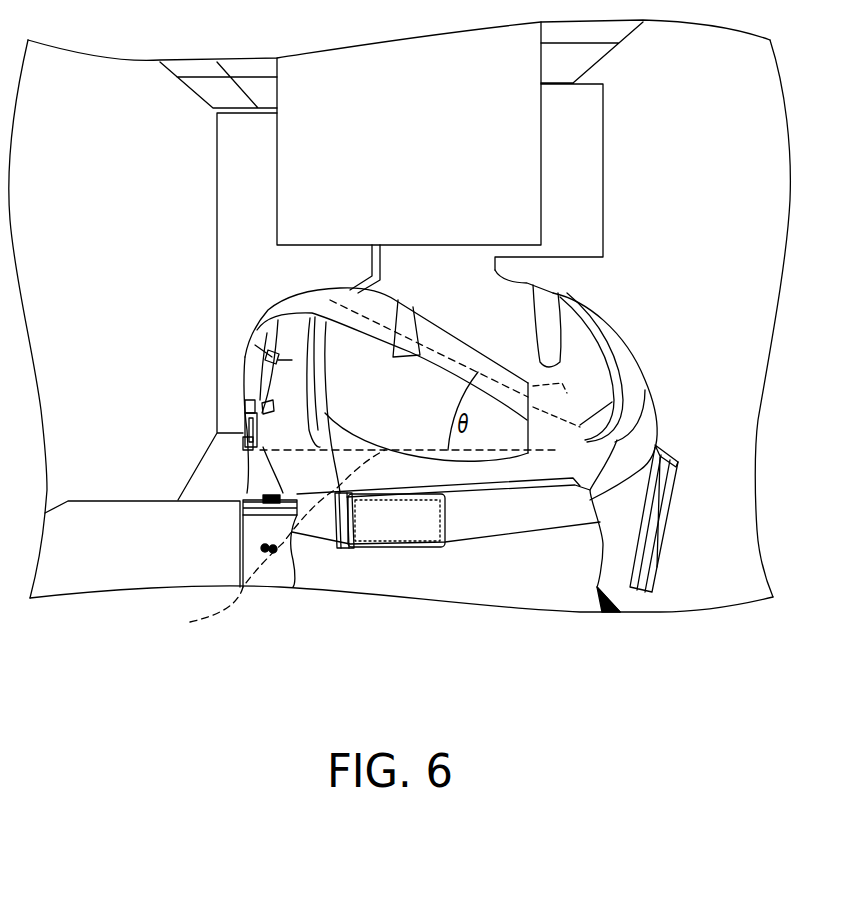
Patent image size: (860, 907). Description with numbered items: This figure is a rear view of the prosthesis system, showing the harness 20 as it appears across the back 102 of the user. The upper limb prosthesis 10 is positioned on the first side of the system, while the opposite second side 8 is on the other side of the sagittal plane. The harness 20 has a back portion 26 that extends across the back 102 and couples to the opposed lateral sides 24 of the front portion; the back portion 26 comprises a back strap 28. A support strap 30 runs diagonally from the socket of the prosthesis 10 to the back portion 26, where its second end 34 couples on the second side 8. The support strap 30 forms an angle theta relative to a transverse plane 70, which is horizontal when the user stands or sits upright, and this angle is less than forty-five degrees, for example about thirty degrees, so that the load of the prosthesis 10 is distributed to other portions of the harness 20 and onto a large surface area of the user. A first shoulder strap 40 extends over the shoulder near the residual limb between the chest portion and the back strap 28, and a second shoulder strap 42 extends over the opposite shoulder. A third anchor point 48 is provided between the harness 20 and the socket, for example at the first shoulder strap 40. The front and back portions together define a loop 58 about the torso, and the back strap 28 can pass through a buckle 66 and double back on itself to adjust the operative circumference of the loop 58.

The second side 8 is at (276, 270).
The upper limb prosthesis 10 is at (243, 502).
The harness 20 is at (553, 281).
The opposed lateral sides 24 is at (270, 500).
The back portion 26 is at (473, 518).
The back strap 28 is at (525, 518).
The support strap 30 is at (400, 320).
The second end 34 is at (594, 394).
The first shoulder strap 40 is at (297, 397).
The second shoulder strap 42 is at (550, 309).
The third anchor point 48 is at (265, 348).
The loop 58 is at (408, 528).
The buckle 66 is at (350, 547).
The transverse plane 70 is at (273, 543).
The back 102 is at (558, 628).